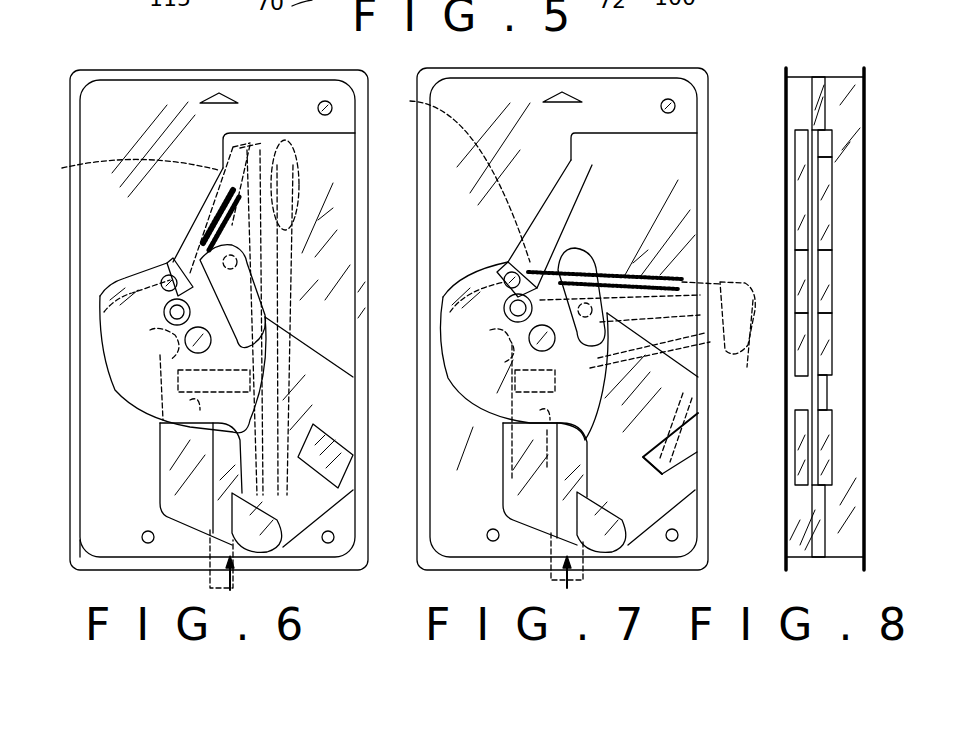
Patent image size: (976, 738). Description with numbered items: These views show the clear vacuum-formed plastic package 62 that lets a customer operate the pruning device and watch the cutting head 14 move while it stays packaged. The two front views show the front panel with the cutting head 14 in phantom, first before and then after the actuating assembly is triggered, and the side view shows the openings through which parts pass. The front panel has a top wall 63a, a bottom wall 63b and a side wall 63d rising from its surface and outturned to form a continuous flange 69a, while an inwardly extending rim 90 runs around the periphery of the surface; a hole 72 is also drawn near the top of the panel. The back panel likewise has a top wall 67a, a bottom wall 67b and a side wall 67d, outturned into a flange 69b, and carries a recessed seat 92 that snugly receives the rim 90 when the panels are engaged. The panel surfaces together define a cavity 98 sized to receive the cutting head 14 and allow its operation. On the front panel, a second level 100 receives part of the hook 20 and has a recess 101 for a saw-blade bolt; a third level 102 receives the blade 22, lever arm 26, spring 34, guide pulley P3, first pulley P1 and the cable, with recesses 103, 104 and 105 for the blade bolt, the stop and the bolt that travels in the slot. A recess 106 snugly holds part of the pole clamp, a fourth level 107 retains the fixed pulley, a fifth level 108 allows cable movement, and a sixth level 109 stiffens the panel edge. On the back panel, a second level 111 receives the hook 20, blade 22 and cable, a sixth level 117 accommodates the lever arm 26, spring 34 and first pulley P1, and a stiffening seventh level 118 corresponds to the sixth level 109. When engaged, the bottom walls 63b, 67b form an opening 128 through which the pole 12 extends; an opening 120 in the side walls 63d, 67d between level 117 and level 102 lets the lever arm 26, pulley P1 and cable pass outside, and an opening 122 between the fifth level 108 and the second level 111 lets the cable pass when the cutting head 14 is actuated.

In FIG. 6, the pole 12 is at (203, 553).
In FIG. 7, the pole 12 is at (553, 572).
In FIG. 6, the cutting head 14 is at (125, 170).
In FIG. 7, the cutting head 14 is at (455, 175).
In FIG. 6, the hook 20 is at (103, 308).
In FIG. 7, the hook 20 is at (452, 295).
In FIG. 6, the cutting blade 22 is at (187, 345).
In FIG. 7, the cutting blade 22 is at (528, 345).
In FIG. 6, the lever arm 26 is at (248, 190).
In FIG. 7, the lever arm 26 is at (698, 282).
In FIG. 6, the spring 34 is at (205, 212).
In FIG. 7, the spring 34 is at (688, 308).
In FIG. 6, the package 62 is at (158, 62).
In FIG. 7, the package 62 is at (597, 60).
In FIG. 8, the top wall 63a is at (799, 76).
In FIG. 8, the bottom wall 63b is at (800, 558).
In FIG. 8, the side wall 63d is at (797, 540).
In FIG. 8, the top wall 67a is at (843, 76).
In FIG. 8, the bottom wall 67b is at (838, 558).
In FIG. 8, the side wall 67d is at (866, 90).
In FIG. 6, the outturned flange 69a is at (86, 566).
In FIG. 8, the outturned flange 69b is at (867, 132).
In FIG. 6, the hole 72 is at (330, 102).
In FIG. 7, the hole 72 is at (483, 540).
In FIG. 6, the rim 90 is at (85, 88).
In FIG. 8, the recessed seat 92 is at (827, 383).
In FIG. 6, the cavity 98 is at (325, 182).
In FIG. 7, the cavity 98 is at (653, 167).
In FIG. 8, the cavity 98 is at (810, 133).
In FIG. 6, the second level 100 is at (100, 290).
In FIG. 7, the second level 100 is at (453, 293).
In FIG. 6, the recess 101 is at (166, 275).
In FIG. 7, the recess 101 is at (507, 263).
In FIG. 6, the third level 102 is at (157, 406).
In FIG. 7, the third level 102 is at (582, 165).
In FIG. 8, the third level 102 is at (800, 163).
In FIG. 6, the recess 103 is at (166, 315).
In FIG. 7, the recess 103 is at (530, 235).
In FIG. 6, the recess 104 is at (157, 363).
In FIG. 7, the recess 104 is at (500, 445).
In FIG. 6, the recess 105 is at (198, 258).
In FIG. 7, the recess 105 is at (578, 248).
In FIG. 6, the recess 106 is at (160, 484).
In FIG. 7, the recess 106 is at (545, 484).
In FIG. 6, the fourth level 107 is at (293, 520).
In FIG. 7, the fourth level 107 is at (645, 515).
In FIG. 6, the fifth level 108 is at (355, 497).
In FIG. 7, the fifth level 108 is at (657, 403).
In FIG. 8, the fifth level 108 is at (808, 236).
In FIG. 6, the sixth level 109 is at (347, 445).
In FIG. 7, the sixth level 109 is at (680, 473).
In FIG. 8, the sixth level 109 is at (803, 437).
In FIG. 8, the second level 111 is at (812, 282).
In FIG. 8, the sixth level 117 is at (826, 200).
In FIG. 8, the seventh level 118 is at (827, 424).
In FIG. 8, the opening 120 is at (798, 222).
In FIG. 8, the opening 122 is at (815, 467).
In FIG. 6, the direction arrow 128 is at (233, 582).
In FIG. 7, the direction arrow 128 is at (567, 578).
In FIG. 6, the first pulley P1 is at (296, 170).
In FIG. 7, the first pulley P1 is at (748, 355).
In FIG. 6, the guide pulley P3 is at (230, 387).
In FIG. 7, the guide pulley P3 is at (693, 495).